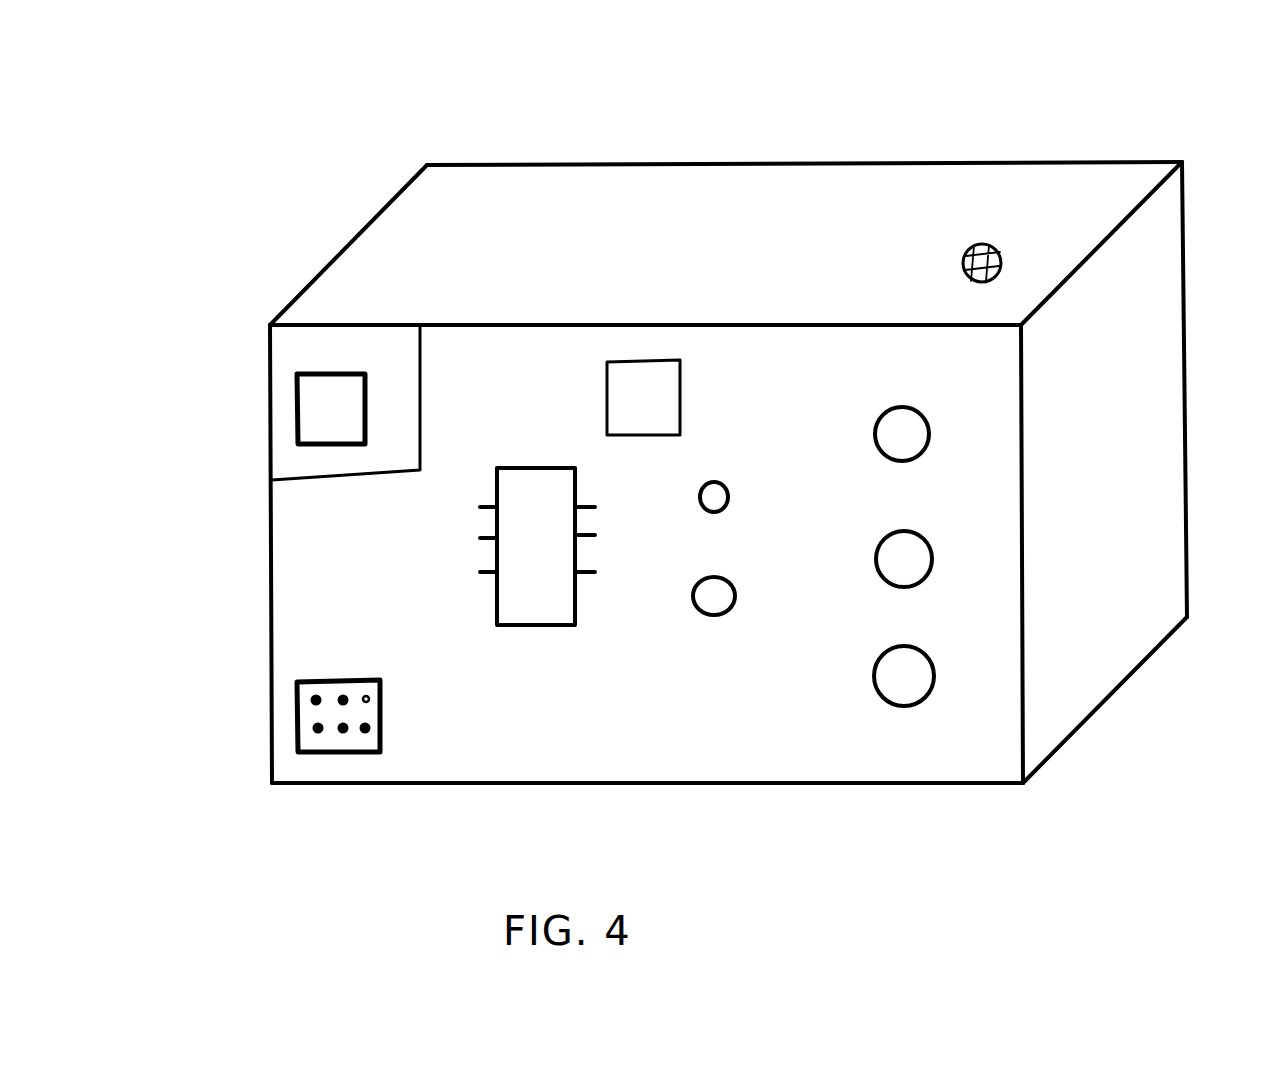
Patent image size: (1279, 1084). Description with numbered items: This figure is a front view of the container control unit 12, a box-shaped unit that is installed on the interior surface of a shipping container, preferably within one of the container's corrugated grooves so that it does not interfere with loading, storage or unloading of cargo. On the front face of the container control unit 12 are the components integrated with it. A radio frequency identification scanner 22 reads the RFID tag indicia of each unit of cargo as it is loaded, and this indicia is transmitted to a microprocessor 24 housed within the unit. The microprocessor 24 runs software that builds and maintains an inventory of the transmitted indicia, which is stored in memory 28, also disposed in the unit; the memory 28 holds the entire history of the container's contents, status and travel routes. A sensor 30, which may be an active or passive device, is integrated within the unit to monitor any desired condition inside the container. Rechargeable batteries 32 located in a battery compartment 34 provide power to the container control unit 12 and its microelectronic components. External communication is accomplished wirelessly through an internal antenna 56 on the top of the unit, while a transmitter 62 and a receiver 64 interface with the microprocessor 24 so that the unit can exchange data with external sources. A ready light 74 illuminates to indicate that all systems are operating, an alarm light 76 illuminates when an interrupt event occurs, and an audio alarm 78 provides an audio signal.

The container control unit 12 is at (407, 830).
The radio frequency identification scanner 22 is at (902, 708).
The microprocessor 24 is at (530, 625).
The memory 28 is at (662, 365).
The sensor 30 is at (932, 562).
The rechargeable batteries 32 is at (297, 405).
The battery compartment 34 is at (305, 479).
The internal antenna 56 is at (994, 246).
The transmitter 62 is at (929, 425).
The receiver 64 is at (917, 458).
The ready light 74 is at (719, 480).
The alarm light 76 is at (726, 614).
The audio alarm 78 is at (328, 681).